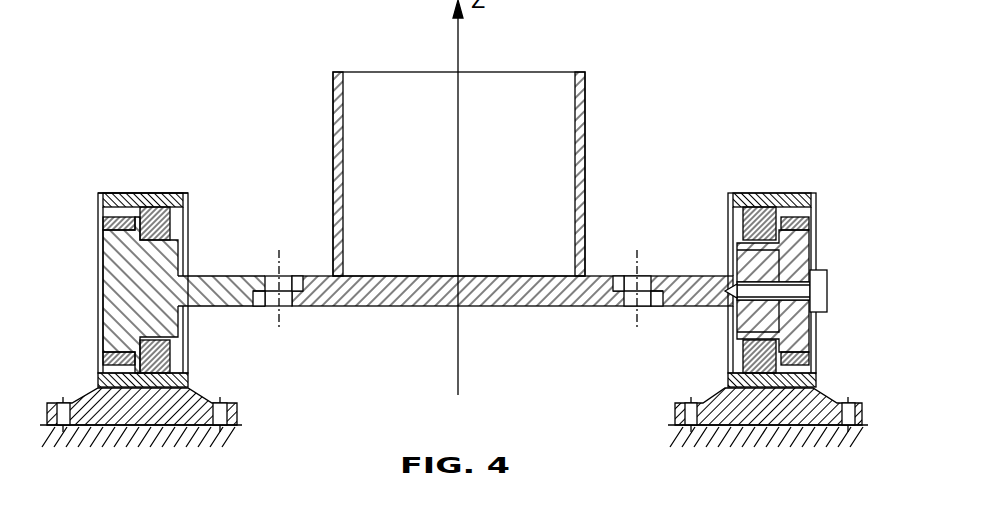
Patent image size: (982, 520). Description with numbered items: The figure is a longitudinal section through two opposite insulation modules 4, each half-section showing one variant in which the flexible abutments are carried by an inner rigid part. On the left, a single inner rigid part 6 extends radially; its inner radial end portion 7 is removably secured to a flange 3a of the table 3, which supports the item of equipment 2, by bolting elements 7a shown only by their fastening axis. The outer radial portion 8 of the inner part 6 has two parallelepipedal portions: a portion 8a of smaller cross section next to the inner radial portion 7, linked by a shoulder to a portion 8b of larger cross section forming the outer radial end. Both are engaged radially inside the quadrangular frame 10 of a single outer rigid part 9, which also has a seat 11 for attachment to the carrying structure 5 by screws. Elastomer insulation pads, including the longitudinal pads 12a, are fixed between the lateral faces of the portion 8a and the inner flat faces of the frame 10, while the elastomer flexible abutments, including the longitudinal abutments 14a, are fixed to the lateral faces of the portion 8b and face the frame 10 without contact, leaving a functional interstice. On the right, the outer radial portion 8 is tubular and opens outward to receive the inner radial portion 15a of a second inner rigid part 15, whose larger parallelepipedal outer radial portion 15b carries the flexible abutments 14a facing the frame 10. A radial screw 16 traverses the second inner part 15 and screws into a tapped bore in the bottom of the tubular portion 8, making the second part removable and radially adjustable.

The item of equipment 2 is at (532, 100).
The table 3 is at (512, 296).
The flange 3a is at (302, 297).
The module 4 is at (78, 180).
The carrying structure 5 is at (62, 432).
The inner rigid part 6 is at (233, 272).
The inner radial end portion 7 is at (241, 296).
The bolting elements 7a is at (281, 260).
The outer radial portion 8 is at (382, 290).
The parallelepipedal portion 8a is at (158, 299).
The parallelepipedal portion 8b is at (122, 245).
The outer rigid part 9 is at (183, 191).
The frame 10 is at (152, 193).
The seat 11 is at (97, 397).
The longitudinal pads 12a is at (167, 221).
The longitudinal abutments 14a is at (117, 214).
The second inner rigid part 15 is at (807, 283).
The inner radial portion 15a is at (763, 267).
The outer radial portion 15b is at (797, 241).
The radial screw 16 is at (818, 300).